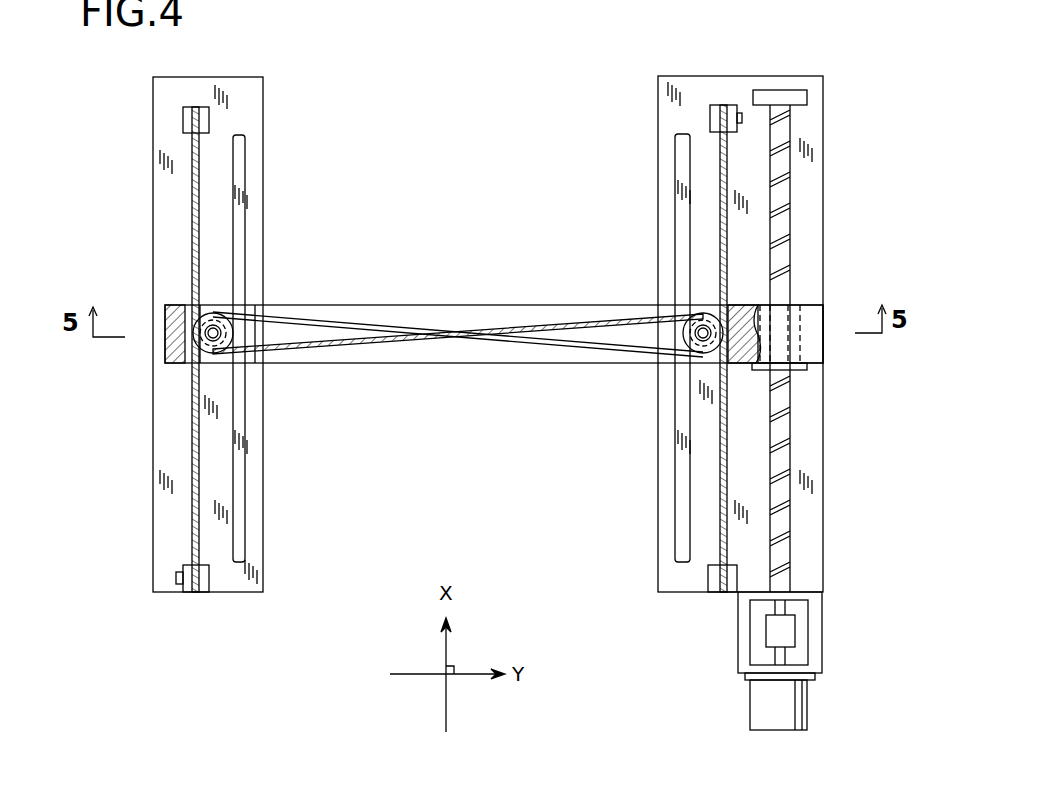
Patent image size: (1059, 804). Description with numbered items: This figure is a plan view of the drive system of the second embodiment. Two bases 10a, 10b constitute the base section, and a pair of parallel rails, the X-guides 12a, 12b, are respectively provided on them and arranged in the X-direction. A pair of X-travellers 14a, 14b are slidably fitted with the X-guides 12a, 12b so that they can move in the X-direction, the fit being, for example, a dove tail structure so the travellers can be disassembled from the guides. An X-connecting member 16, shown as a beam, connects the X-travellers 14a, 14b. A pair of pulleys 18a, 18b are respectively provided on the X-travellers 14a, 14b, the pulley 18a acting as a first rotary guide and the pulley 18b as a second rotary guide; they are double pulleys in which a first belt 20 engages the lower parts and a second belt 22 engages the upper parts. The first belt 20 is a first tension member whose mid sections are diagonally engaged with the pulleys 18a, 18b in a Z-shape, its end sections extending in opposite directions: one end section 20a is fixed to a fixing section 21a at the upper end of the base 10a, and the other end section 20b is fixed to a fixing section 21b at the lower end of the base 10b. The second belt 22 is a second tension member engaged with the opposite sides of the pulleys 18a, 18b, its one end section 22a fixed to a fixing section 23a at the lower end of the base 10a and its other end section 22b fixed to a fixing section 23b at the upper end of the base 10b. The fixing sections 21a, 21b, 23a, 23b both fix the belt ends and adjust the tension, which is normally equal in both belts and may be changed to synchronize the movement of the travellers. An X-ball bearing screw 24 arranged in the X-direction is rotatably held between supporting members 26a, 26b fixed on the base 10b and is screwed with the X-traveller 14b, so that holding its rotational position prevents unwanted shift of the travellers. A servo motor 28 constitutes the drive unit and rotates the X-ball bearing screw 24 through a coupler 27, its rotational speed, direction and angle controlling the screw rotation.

The base 10a is at (165, 204).
The base 10b is at (810, 190).
The X-guide 12a is at (240, 178).
The X-guide 12b is at (682, 178).
The X-traveller 14a is at (172, 312).
The X-traveller 14b is at (817, 312).
The X-connecting member 16 is at (470, 318).
The pulley 18a is at (210, 354).
The pulley 18b is at (712, 362).
The first belt 20 is at (367, 345).
The second belt 22 is at (345, 322).
The end section of the first belt 20a is at (190, 128).
The end section of the first belt 20b is at (738, 565).
The fixing section 21a is at (183, 115).
The fixing section 21b is at (718, 592).
The end section of the second belt 22a is at (185, 572).
The end section of the second belt 22b is at (740, 130).
The fixing section 23a is at (178, 585).
The fixing section 23b is at (730, 106).
The X-ball bearing screw 24 is at (790, 485).
The supporting member 26a is at (808, 98).
The supporting member 26b is at (815, 612).
The coupler 27 is at (782, 630).
The servo motor 28 is at (790, 703).